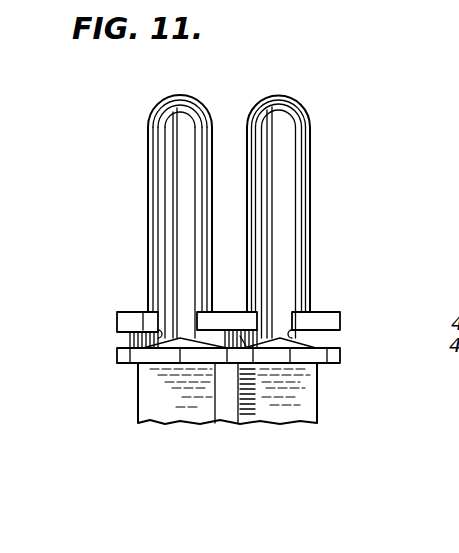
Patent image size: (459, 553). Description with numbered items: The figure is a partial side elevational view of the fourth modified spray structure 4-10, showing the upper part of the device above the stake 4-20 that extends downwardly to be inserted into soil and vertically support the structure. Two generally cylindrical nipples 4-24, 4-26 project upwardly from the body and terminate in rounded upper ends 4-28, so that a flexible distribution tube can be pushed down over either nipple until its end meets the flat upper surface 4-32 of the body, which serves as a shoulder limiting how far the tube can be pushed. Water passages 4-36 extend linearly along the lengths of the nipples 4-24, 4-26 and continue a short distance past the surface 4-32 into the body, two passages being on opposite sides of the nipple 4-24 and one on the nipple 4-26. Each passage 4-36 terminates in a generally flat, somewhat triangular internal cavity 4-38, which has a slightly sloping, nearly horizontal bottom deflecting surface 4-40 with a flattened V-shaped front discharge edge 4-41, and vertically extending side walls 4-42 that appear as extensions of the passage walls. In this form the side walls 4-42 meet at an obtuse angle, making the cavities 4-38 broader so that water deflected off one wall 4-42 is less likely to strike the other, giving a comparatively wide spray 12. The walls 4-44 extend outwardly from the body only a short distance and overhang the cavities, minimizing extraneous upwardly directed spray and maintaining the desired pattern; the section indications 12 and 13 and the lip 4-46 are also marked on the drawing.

The spray structure 4-10 is at (325, 130).
The stake 4-20 is at (176, 406).
The nipple 4-24 is at (150, 137).
The nipple 4-26 is at (309, 160).
The rounded upper ends 4-28 is at (272, 95).
The flat upper surface 4-32 is at (143, 312).
The water passages 4-36 is at (172, 193).
The internal cavity 4-38 is at (243, 345).
The bottom deflecting surface 4-40 is at (185, 347).
The front discharge edge 4-41 is at (150, 360).
The side walls 4-42 is at (137, 355).
The walls 4-44 is at (130, 318).
The seat lip 4-46 is at (158, 337).
The spray 12 is at (277, 48).
The section line 13- 13 is at (117, 329).